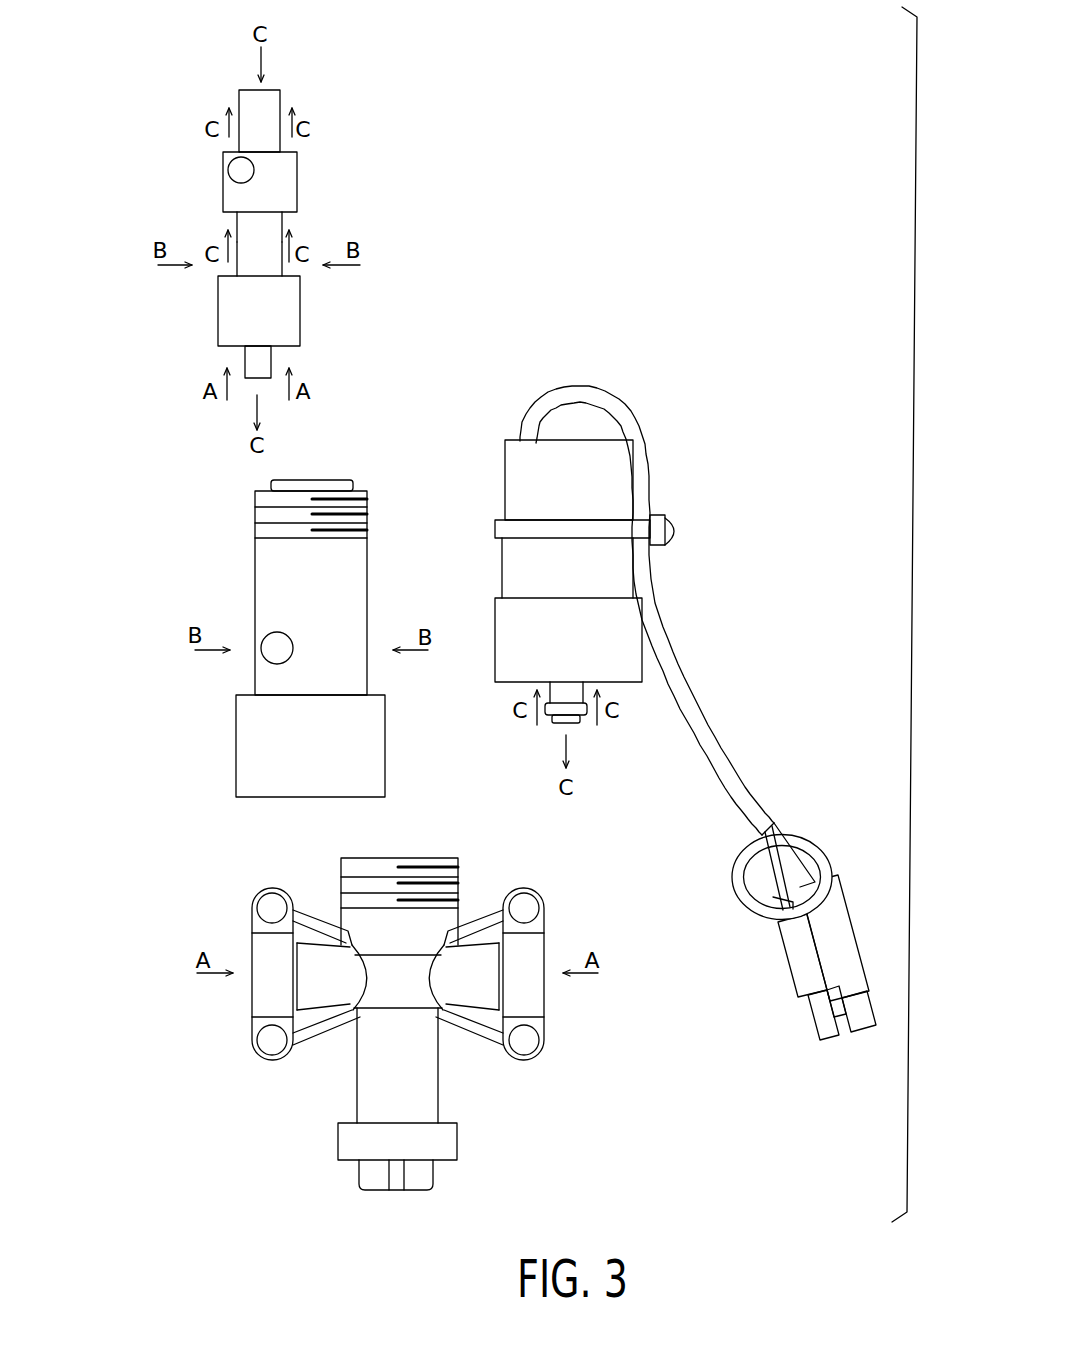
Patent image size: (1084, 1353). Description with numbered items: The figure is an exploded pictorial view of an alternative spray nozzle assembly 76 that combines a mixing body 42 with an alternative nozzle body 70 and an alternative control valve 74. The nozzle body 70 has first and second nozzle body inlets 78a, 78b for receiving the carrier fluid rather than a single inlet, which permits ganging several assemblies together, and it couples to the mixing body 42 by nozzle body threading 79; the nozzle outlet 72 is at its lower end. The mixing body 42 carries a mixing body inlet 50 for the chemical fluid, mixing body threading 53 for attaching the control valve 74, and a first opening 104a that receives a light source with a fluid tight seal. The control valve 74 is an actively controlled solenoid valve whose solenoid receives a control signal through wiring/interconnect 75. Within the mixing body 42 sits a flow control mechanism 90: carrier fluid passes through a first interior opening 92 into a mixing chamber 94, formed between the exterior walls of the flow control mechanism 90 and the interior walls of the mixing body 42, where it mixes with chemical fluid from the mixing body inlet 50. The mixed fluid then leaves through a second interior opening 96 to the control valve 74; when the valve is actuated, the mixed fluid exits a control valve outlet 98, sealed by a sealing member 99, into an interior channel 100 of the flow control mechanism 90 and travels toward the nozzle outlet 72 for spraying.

The mixing body 42 is at (265, 763).
The mixing body inlet 50 is at (278, 647).
The mixing body threading 53 is at (348, 514).
The nozzle body 70 is at (383, 1067).
The nozzle outlet 72 is at (375, 1175).
The control valve 74 is at (610, 485).
The wiring/interconnect 75 is at (708, 742).
The spray nozzle assembly 76 is at (118, 540).
The first nozzle body inlet 78a is at (251, 988).
The second nozzle body inlet 78b is at (545, 988).
The nozzle body threading 79 is at (430, 883).
The flow control mechanism 90 is at (283, 179).
The first interior opening 92 is at (232, 350).
The mixing chamber 94 is at (228, 262).
The second interior opening 96 is at (232, 214).
The control valve outlet 98 is at (557, 725).
The sealing member 99 is at (576, 725).
The interior channel 100 is at (265, 103).
The first opening 104a is at (237, 173).